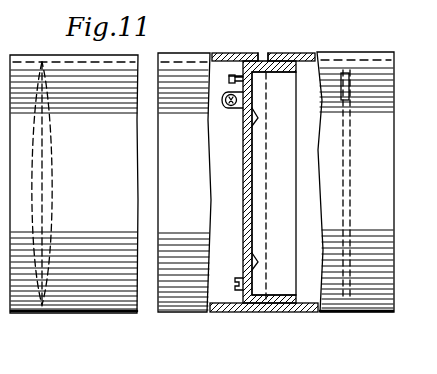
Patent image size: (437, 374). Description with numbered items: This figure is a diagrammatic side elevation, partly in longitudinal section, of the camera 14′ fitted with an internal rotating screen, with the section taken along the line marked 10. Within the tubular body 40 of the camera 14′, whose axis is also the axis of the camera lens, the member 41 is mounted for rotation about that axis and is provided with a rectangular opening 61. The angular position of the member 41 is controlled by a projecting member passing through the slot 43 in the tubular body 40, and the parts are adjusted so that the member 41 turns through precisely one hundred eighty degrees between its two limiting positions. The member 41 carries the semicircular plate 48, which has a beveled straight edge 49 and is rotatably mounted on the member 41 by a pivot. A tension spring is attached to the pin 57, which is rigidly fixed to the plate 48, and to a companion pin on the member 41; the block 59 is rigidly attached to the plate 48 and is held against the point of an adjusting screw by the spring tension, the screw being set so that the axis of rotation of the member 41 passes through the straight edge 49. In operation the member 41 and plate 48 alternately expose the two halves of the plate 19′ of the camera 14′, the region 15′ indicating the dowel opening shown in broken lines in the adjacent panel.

The section line of FIG. 10 is at (195, 14).
The camera 14′ is at (112, 313).
The dowel opening 15′ is at (65, 188).
The plate 19′ is at (352, 170).
The tubular body 40 is at (300, 52).
The member 41 is at (283, 106).
The slot 43 is at (263, 53).
The semicircular plate 48 is at (246, 220).
The beveled straight edge 49 is at (234, 280).
The pin 57 is at (232, 83).
The block 59 is at (229, 108).
The rectangular opening 61 is at (258, 118).